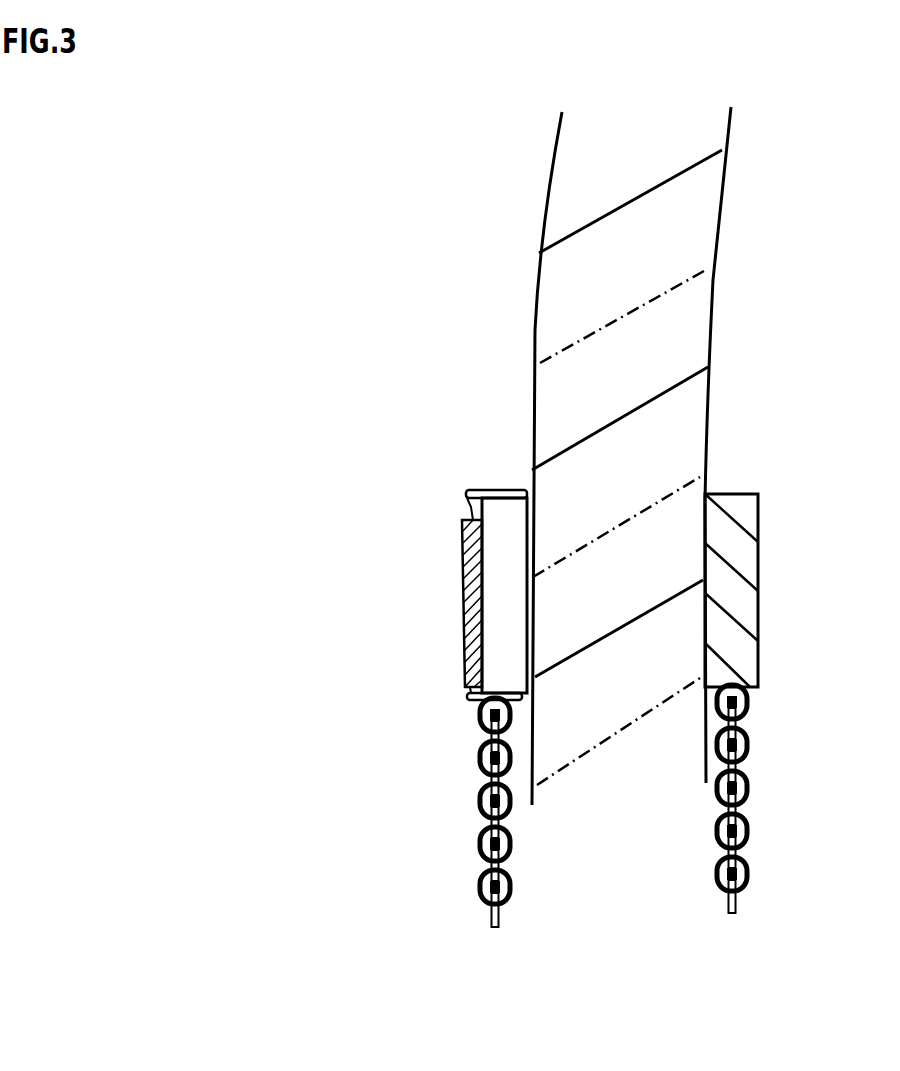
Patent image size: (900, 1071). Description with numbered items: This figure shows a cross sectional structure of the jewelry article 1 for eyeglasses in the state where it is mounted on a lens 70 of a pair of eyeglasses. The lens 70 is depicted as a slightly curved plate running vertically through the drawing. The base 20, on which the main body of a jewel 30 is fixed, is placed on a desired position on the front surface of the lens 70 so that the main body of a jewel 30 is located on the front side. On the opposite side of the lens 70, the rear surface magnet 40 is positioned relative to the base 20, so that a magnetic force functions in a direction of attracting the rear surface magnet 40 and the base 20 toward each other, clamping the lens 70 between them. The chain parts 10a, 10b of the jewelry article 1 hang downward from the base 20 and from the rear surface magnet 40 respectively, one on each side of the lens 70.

The jewelry article 1 is at (423, 668).
The chain part 10a is at (482, 793).
The chain part 10b is at (748, 790).
The base 20 is at (487, 488).
The main body of a jewel 30 is at (462, 577).
The rear surface magnet 40 is at (748, 520).
The lens 70 is at (703, 342).